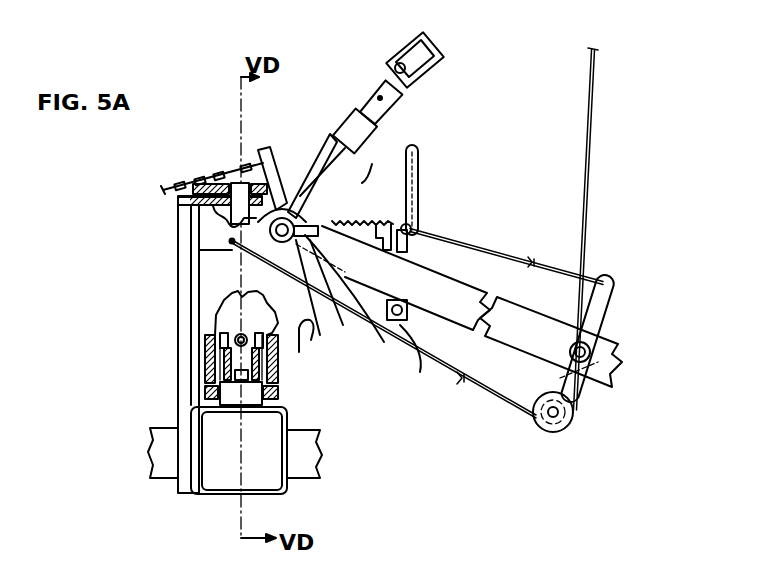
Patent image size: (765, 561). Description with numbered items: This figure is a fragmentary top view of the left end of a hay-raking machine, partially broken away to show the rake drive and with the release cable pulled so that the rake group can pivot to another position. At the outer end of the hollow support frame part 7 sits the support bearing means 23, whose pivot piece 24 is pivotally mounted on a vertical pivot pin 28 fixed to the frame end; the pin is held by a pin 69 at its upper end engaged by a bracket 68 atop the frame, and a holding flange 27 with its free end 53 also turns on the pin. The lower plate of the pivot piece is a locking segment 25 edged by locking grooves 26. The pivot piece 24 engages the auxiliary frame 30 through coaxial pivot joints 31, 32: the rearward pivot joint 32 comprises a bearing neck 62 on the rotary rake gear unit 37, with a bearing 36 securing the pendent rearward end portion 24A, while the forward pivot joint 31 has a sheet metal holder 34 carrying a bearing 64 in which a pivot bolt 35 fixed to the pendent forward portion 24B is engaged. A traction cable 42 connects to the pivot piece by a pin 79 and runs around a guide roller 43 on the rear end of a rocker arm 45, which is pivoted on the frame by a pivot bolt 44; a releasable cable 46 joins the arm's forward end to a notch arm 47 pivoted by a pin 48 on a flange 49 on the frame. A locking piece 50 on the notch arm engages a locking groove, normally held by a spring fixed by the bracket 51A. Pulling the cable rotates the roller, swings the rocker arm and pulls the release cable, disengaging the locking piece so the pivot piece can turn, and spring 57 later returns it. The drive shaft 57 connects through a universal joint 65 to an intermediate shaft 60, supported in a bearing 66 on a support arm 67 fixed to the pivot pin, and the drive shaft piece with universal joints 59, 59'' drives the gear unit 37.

The support frame part 7 is at (466, 248).
The support bearing means 23 is at (348, 372).
The pivot piece 24 is at (195, 268).
The pendent rearward end portion 24A is at (205, 358).
The pendent forward portion 24B is at (205, 186).
The locking segment 25 is at (427, 136).
The locking grooves 26 is at (341, 258).
The holding flange 27 is at (265, 190).
The pivot pin 28 is at (262, 192).
The auxiliary frame 30 is at (136, 469).
The forward pivot joint 31 is at (212, 180).
The rearward pivot joint 32 is at (290, 398).
The sheet metal holder 34 is at (200, 214).
The pivot bolt 35 is at (236, 185).
The bearing 36 is at (205, 388).
The rotary rake gear unit 37 is at (265, 477).
The traction cable 42 is at (591, 118).
The guide roller 43 is at (569, 424).
The pivot bolt 44 is at (572, 356).
The rocker arm 45 is at (610, 318).
The releasable cable 46 is at (501, 252).
The notch arm 47 is at (398, 240).
The pin 48 is at (408, 318).
The flange 49 is at (420, 361).
The locking piece 50 is at (410, 224).
The bracket 51A is at (330, 222).
The free end 53 is at (355, 299).
The drive shaft 57 is at (378, 192).
The universal joint 59 is at (286, 170).
The universal joint 59'' is at (198, 335).
The intermediate shaft 60 is at (363, 102).
The bearing neck 62 is at (232, 402).
The bearing 64 is at (230, 220).
The universal joint 65 is at (392, 52).
The bearing 66 is at (348, 118).
The support arm 67 is at (322, 137).
The bracket 68 is at (341, 294).
The pin 69 is at (319, 300).
The pin 79 is at (203, 256).